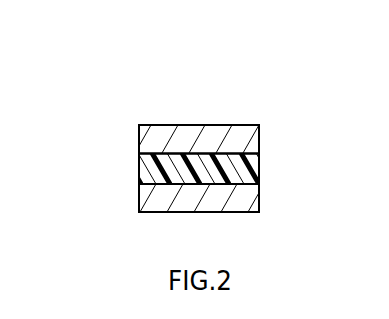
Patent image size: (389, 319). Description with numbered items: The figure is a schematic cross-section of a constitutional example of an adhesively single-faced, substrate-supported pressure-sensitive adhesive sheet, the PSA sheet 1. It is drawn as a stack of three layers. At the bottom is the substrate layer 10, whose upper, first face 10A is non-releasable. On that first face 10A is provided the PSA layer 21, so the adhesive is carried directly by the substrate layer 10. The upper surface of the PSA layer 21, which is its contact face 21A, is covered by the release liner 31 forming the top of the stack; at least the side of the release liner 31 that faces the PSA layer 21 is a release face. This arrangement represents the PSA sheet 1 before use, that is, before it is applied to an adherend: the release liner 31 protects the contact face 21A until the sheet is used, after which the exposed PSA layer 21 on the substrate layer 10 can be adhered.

The PSA sheet 1 is at (238, 87).
The release liner 31 is at (259, 130).
The PSA layer 21 is at (259, 165).
The substrate layer 10 is at (259, 196).
The surface of the PSA layer 21A is at (160, 153).
The first face of the substrate layer 10A is at (160, 184).